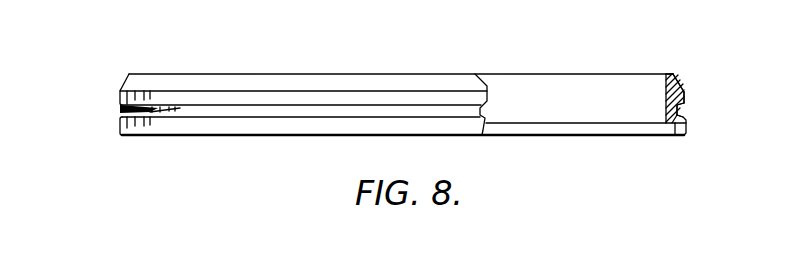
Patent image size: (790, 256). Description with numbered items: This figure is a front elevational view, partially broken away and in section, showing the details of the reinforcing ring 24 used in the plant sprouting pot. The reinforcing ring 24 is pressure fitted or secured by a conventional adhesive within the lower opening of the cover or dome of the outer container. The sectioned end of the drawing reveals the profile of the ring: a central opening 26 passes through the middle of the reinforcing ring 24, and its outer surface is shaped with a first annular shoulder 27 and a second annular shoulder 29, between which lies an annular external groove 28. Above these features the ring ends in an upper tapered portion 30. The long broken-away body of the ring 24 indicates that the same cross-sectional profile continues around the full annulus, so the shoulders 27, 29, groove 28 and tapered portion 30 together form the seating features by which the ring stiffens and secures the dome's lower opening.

The reinforcing ring 24 is at (109, 101).
The central opening 26 is at (665, 92).
The first annular shoulder 27 is at (687, 126).
The annular external groove 28 is at (682, 110).
The second annular shoulder 29 is at (686, 99).
The upper tapered portion 30 is at (684, 90).